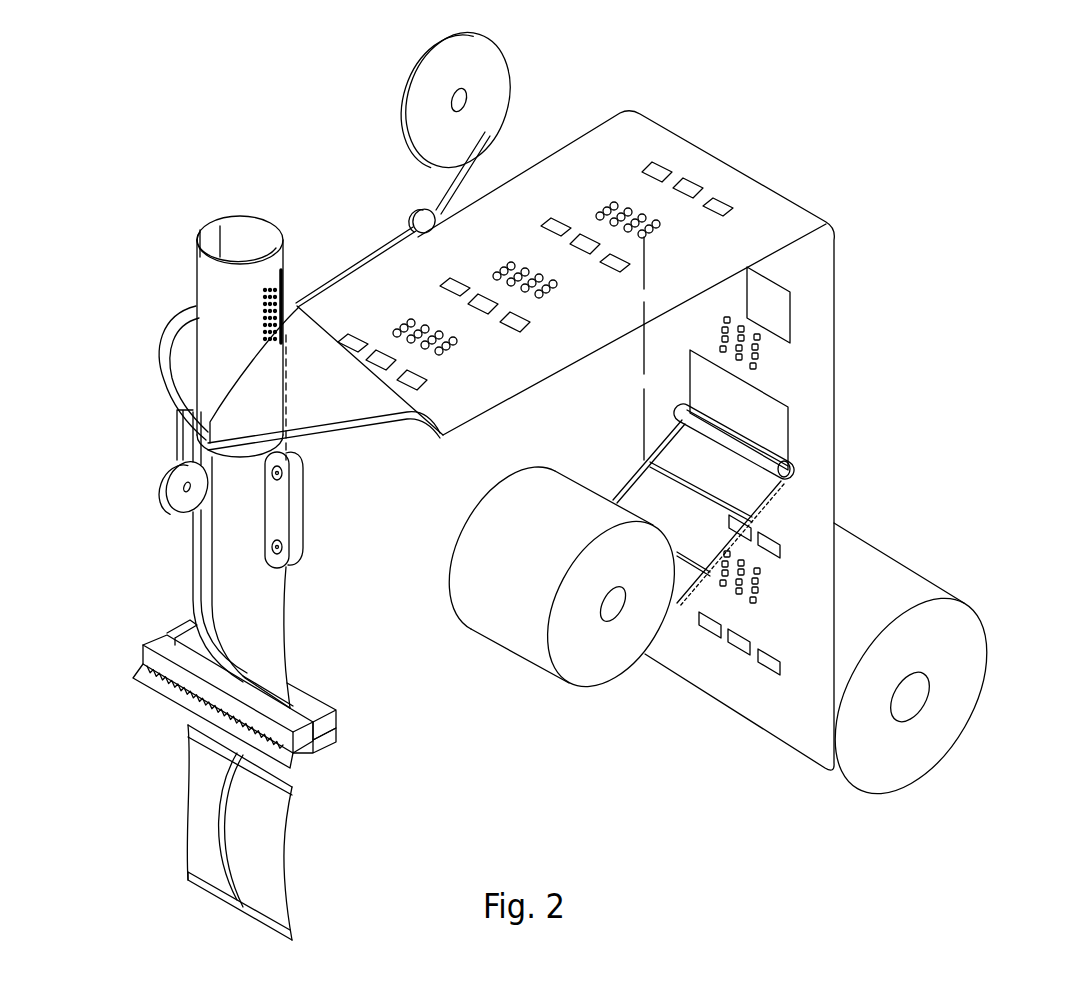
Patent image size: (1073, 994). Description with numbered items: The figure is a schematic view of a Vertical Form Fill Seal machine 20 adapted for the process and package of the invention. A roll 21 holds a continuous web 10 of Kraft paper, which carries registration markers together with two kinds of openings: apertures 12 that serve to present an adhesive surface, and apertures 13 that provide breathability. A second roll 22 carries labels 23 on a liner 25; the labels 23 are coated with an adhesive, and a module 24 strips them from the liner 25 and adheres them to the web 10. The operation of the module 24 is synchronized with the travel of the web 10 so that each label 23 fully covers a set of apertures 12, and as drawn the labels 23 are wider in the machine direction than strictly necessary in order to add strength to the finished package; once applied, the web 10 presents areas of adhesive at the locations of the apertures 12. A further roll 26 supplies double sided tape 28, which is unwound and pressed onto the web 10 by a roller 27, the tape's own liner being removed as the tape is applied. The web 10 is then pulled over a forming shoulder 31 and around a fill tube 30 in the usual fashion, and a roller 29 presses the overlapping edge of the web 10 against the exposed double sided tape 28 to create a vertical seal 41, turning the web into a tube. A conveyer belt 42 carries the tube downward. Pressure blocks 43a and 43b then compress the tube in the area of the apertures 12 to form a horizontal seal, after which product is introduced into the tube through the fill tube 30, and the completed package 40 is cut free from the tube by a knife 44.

The web 10 is at (853, 270).
The apertures for presenting an adhesive surface 12 is at (657, 173).
The apertures for providing breathability 13 is at (611, 213).
The VFFS machine 20 is at (312, 204).
The roll 21 is at (935, 631).
The roll 22 is at (592, 667).
The labels 23 is at (687, 458).
The module 24 is at (787, 467).
The liner 25 is at (478, 567).
The roll 26 is at (455, 68).
The roller 27 is at (404, 216).
The double sided tape 28 is at (458, 182).
The roller 29 is at (183, 497).
The fill tube 30 is at (207, 282).
The forming shoulder 31 is at (335, 427).
The completed package 40 is at (205, 853).
The vertical seal 41 is at (205, 600).
The conveyer belt 42 is at (297, 545).
The pressure block 43a is at (335, 730).
The pressure block 43b is at (313, 750).
The knife 44 is at (170, 693).